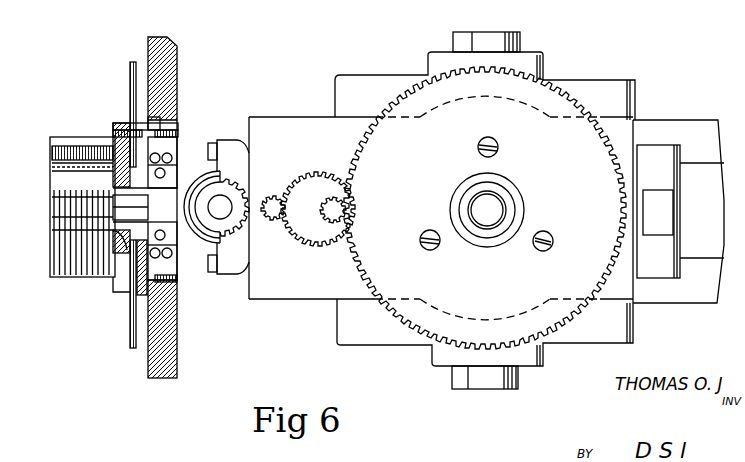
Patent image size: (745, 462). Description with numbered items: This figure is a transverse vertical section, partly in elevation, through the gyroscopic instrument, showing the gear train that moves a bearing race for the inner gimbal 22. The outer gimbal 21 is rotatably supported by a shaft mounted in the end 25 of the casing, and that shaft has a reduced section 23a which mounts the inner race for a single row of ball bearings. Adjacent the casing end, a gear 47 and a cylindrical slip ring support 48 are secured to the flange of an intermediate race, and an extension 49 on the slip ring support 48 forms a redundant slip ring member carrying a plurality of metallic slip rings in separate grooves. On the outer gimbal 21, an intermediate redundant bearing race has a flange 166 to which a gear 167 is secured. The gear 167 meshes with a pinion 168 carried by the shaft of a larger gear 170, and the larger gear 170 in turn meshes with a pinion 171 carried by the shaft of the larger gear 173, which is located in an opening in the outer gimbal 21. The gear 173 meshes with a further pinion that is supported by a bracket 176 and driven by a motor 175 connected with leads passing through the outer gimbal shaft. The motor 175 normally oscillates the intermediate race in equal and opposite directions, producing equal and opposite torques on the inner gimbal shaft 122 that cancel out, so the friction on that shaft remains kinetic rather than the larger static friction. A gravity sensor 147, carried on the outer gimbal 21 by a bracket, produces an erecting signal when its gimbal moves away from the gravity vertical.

The outer gimbal 21 is at (306, 131).
The inner gimbal 22 is at (381, 70).
The reduced section 23a is at (143, 207).
The end 25 is at (163, 365).
The gear 47 is at (131, 76).
The cylindrical slip ring support 48 is at (122, 291).
The extension 49 is at (52, 140).
The inner gimbal shaft 122 is at (490, 222).
The gravity sensor 147 is at (669, 287).
The flange 166 is at (545, 231).
The gear 167 is at (485, 208).
The pinion 168 is at (325, 212).
The larger gear 170 is at (325, 250).
The pinion 171 is at (271, 195).
The larger gear 173 is at (243, 187).
The motor 175 is at (203, 246).
The bracket 176 is at (193, 178).